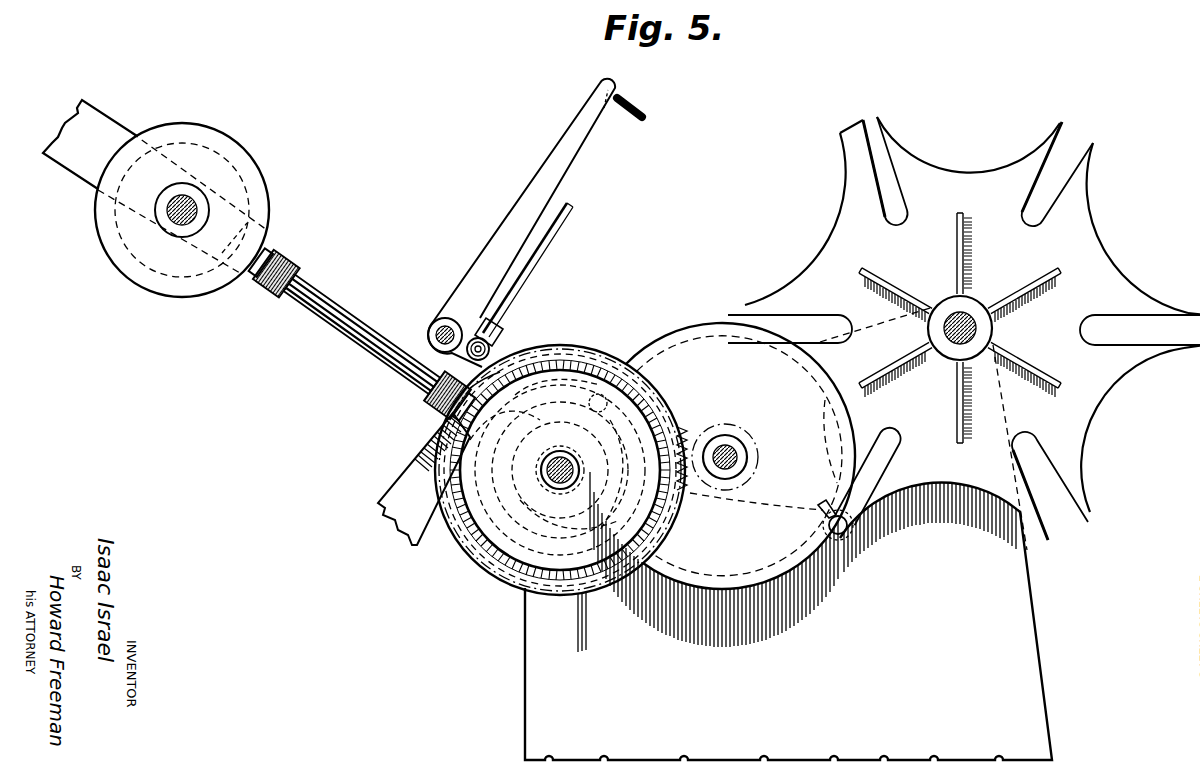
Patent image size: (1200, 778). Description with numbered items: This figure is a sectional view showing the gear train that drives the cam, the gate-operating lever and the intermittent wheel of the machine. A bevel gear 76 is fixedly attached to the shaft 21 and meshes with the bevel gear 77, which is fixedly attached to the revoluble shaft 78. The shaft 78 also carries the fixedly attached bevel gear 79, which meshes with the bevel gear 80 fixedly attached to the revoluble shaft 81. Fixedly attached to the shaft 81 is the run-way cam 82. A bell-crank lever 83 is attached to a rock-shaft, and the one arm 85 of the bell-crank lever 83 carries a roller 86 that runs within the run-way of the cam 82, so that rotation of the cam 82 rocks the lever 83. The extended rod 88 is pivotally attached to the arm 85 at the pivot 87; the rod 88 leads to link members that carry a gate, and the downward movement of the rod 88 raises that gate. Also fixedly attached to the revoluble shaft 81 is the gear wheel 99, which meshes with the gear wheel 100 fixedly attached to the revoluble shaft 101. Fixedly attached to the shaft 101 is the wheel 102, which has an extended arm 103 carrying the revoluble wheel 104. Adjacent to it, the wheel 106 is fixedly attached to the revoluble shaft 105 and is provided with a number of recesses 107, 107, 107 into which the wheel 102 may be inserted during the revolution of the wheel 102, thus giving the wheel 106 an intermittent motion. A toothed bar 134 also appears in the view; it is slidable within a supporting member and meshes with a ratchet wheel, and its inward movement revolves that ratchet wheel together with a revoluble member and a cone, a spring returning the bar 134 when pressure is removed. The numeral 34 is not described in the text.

The shaft 21 is at (168, 222).
The pivot pin 34 is at (437, 321).
The bevel gear 76 is at (255, 180).
The bevel gear 77 is at (223, 257).
The revoluble shaft 78 is at (337, 334).
The bevel gear 79 is at (462, 549).
The bevel gear 80 is at (543, 503).
The revoluble shaft 81 is at (561, 482).
The run-way cam 82 is at (593, 540).
The bell-crank lever 83 is at (500, 247).
The arm 85 is at (502, 351).
The roller 86 is at (599, 394).
The pivot 87 is at (492, 343).
The extended rod 88 is at (538, 250).
The gear wheel 99 is at (627, 363).
The gear wheel 100 is at (712, 497).
The revoluble shaft 101 is at (738, 454).
The wheel 102 is at (762, 567).
The extended arm 103 is at (847, 550).
The revoluble wheel 104 is at (827, 527).
The revoluble shaft 105 is at (978, 326).
The wheel 106 is at (1072, 412).
The recesses 107 is at (1068, 145).
The toothed bar 134 is at (650, 108).